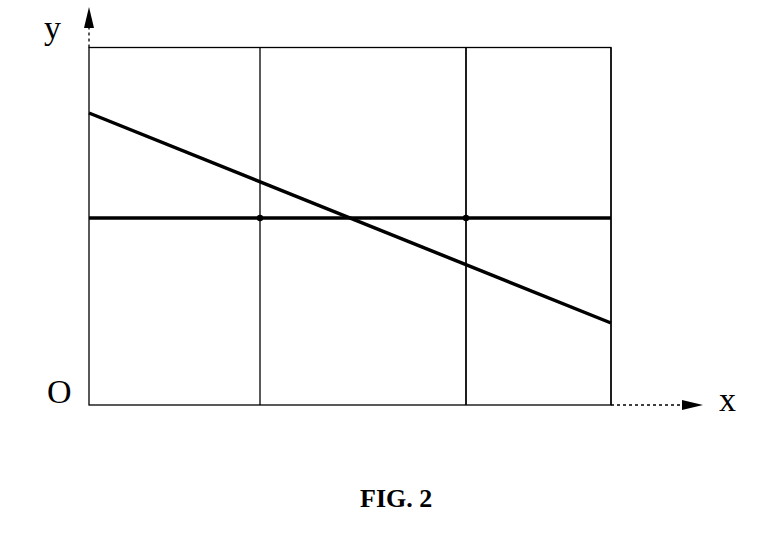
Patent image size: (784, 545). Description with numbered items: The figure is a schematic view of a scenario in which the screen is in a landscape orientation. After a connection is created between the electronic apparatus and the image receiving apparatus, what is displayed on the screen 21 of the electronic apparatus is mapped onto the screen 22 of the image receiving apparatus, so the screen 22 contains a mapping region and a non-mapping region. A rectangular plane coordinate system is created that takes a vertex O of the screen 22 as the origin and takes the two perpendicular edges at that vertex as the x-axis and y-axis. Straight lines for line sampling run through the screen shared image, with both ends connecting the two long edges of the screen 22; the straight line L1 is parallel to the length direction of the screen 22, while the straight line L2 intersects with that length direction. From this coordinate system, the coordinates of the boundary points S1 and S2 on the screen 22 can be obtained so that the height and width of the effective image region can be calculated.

The screen of the electronic apparatus 21 is at (363, 227).
The screen of the image receiving apparatus 22 is at (538, 227).
The straight line L1 is at (374, 220).
The straight line L2 is at (374, 230).
The boundary point S1 is at (241, 239).
The boundary point S2 is at (484, 194).